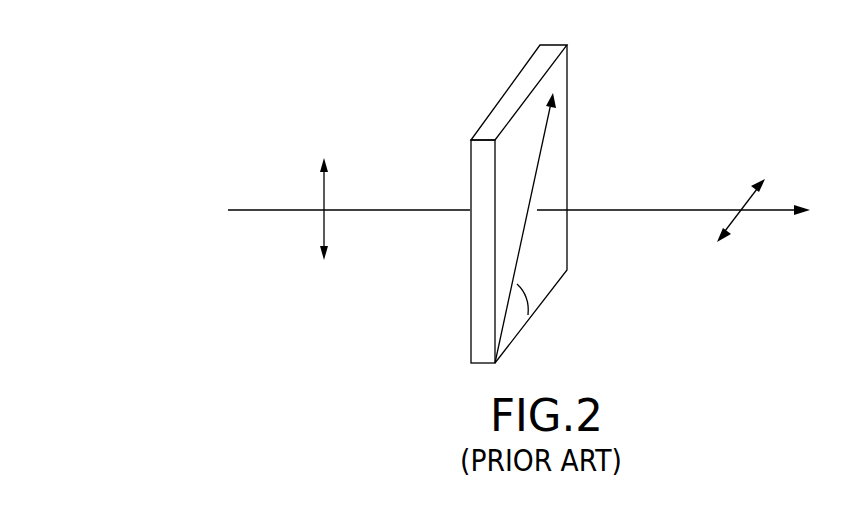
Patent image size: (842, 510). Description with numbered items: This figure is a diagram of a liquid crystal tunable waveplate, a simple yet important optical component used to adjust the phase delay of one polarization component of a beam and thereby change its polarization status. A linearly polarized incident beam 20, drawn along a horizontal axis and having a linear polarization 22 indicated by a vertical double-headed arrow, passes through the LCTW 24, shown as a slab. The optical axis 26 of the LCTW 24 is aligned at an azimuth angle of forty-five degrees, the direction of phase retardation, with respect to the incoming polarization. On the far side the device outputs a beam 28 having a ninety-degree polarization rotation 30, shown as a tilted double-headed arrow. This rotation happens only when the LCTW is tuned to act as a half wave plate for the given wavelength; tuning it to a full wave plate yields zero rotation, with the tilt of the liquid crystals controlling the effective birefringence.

The incident beam 20 is at (258, 210).
The linear polarization 22 is at (324, 222).
The liquid crystal tunable waveplate 24 is at (468, 310).
The optical axis 26 is at (555, 118).
The output beam 28 is at (658, 210).
The polarization rotation 30 is at (733, 225).